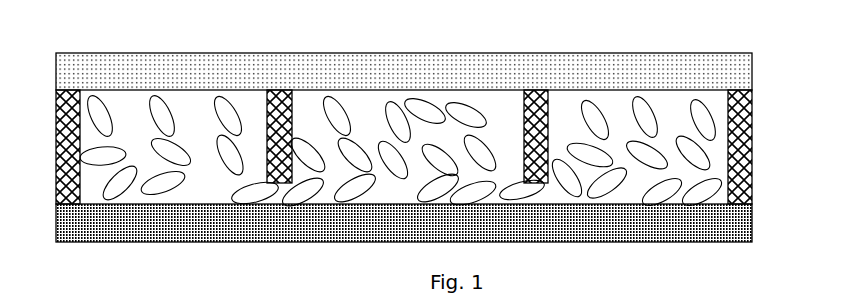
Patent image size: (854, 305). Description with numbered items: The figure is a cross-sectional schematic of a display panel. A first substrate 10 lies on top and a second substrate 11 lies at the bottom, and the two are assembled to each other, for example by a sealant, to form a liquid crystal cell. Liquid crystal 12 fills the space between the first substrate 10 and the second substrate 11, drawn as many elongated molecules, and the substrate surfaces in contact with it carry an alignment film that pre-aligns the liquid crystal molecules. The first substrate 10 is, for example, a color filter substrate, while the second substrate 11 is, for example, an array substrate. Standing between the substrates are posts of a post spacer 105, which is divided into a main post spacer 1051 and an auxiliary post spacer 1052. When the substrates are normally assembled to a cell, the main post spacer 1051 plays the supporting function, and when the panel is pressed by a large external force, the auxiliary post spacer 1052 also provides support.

The first substrate 10 is at (717, 78).
The second substrate 11 is at (718, 230).
The liquid crystal 12 is at (690, 155).
The post spacer 105 is at (450, 147).
The main post spacer 1051 is at (549, 135).
The auxiliary post spacer 1052 is at (752, 96).